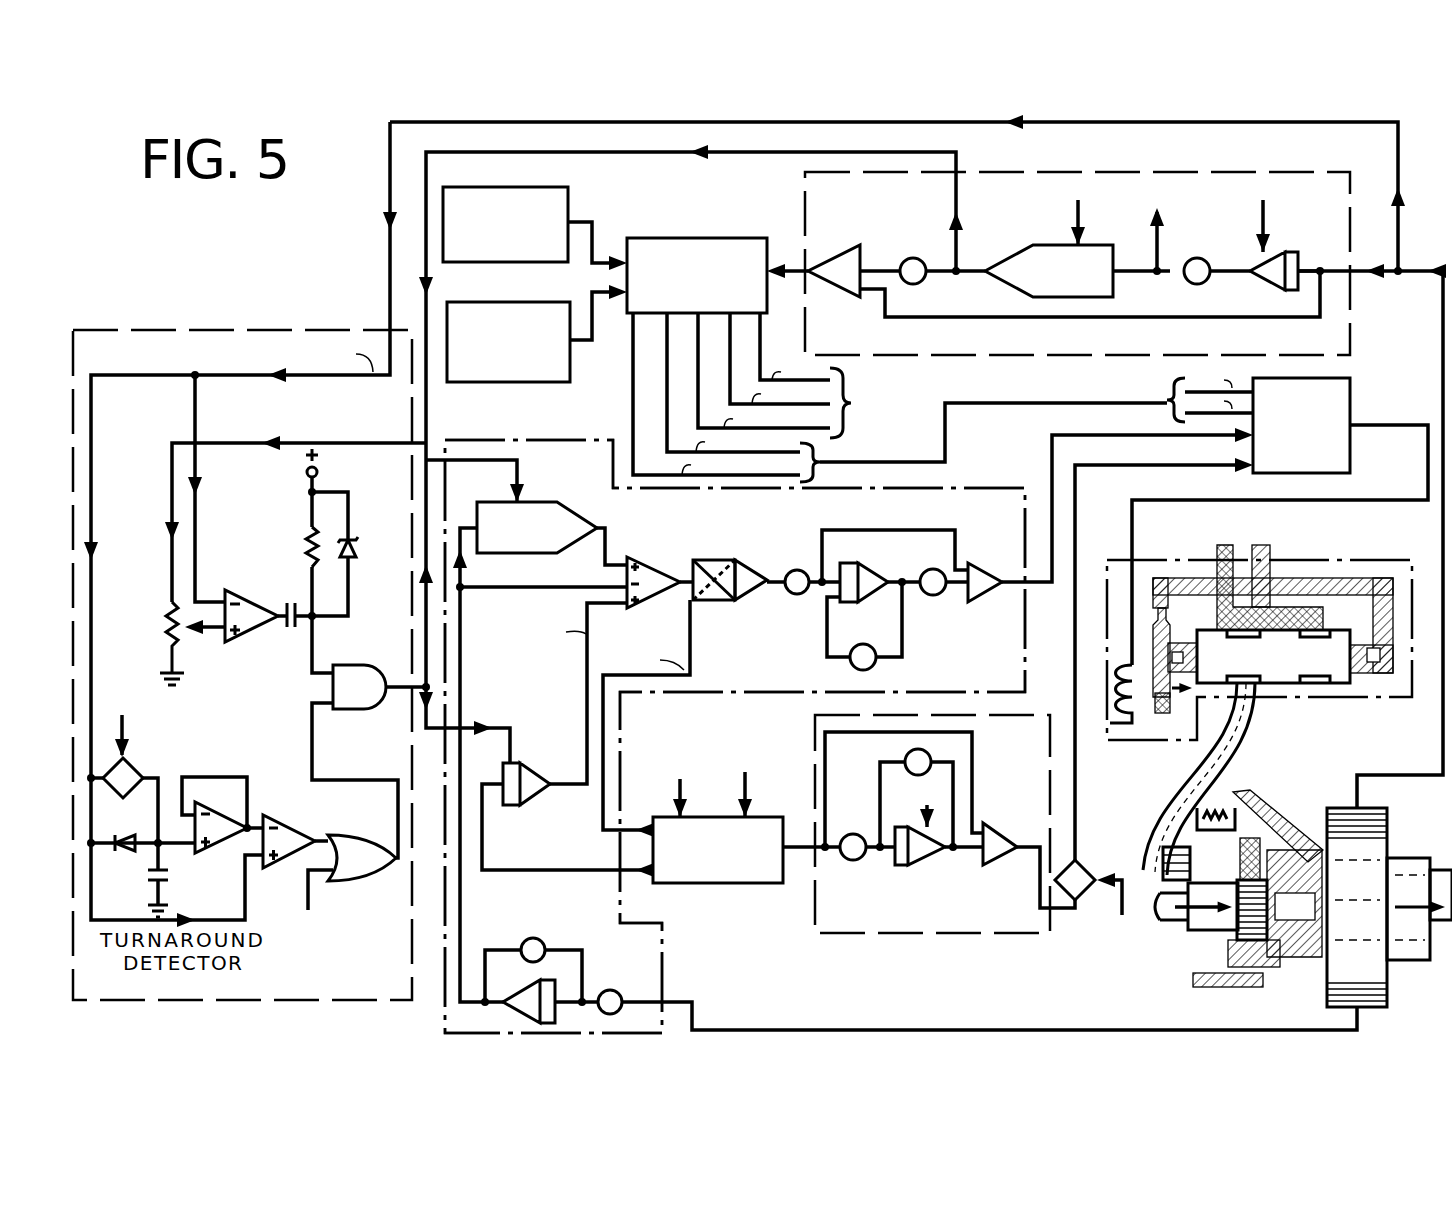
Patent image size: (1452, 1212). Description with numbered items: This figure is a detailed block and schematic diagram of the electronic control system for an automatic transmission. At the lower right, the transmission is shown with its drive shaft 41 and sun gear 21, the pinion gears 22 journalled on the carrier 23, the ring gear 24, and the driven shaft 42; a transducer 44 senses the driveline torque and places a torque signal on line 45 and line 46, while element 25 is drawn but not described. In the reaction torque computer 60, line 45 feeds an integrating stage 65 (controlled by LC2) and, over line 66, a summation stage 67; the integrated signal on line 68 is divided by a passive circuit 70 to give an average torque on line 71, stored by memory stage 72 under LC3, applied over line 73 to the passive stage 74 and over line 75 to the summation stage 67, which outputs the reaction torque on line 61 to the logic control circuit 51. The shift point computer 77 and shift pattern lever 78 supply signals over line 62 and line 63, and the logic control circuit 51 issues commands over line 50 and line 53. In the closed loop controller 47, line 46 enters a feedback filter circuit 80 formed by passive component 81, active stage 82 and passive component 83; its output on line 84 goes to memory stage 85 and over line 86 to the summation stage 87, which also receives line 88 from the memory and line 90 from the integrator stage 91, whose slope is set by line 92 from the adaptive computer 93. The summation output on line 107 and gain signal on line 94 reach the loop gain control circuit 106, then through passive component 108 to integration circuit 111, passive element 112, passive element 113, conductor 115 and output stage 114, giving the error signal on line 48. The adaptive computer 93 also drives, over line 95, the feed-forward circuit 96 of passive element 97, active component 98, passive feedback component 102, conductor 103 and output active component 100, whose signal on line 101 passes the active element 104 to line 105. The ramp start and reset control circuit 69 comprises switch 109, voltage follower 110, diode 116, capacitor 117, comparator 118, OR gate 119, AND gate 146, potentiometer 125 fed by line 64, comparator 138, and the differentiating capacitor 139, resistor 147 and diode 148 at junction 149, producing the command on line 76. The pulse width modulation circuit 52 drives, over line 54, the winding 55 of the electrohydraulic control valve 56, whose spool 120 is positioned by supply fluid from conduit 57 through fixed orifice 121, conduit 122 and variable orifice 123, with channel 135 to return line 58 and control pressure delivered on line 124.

The sun gear 21 is at (1248, 905).
The pinion gears 22 is at (1258, 852).
The carrier 23 is at (1270, 852).
The ring gear 24 is at (1258, 792).
The spring 25 is at (1212, 808).
The drive shaft 41 is at (1180, 932).
The driven shaft 42 is at (1425, 858).
The transducer 44 is at (1380, 975).
The line 45 is at (390, 312).
The line 46 is at (1280, 1030).
The closed loop controller 47 is at (735, 736).
The line 48 is at (1052, 462).
The line 50 is at (751, 397).
The logic control circuit 51 is at (716, 238).
The pulse width modulation circuit 52 is at (1350, 386).
The line 53 is at (1036, 410).
The line 54 is at (1362, 500).
The winding 55 is at (1112, 725).
The electrohydraulic control valve 56 is at (1356, 560).
The conduit 57 is at (1262, 545).
The return pressure line 58 is at (1222, 545).
The reaction torque computer 60 is at (1228, 155).
The line 61 is at (784, 278).
The line 62 is at (598, 230).
The line 63 is at (596, 325).
The line 64 is at (753, 155).
The integrating stage 65 is at (1290, 250).
The line 66 is at (1133, 317).
The summation stage 67 is at (840, 262).
The line 68 is at (1230, 268).
The ramp start and reset control circuit 69 is at (200, 330).
The passive circuit 70 is at (1200, 258).
The line 71 is at (1152, 244).
The memory stage 72 is at (1034, 245).
The line 73 is at (972, 267).
The passive stage 74 is at (913, 258).
The line 75 is at (882, 267).
The line 76 is at (412, 698).
The shift point computer 77 is at (486, 187).
The shift pattern lever 78 is at (487, 302).
The feedback filter circuit 80 is at (683, 958).
The passive component 81 is at (604, 990).
The active stage 82 is at (520, 990).
The passive component 83 is at (522, 944).
The line 84 is at (465, 655).
The memory stage 85 is at (540, 556).
The line 86 is at (543, 590).
The summation stage 87 is at (652, 565).
The line 88 is at (608, 545).
The line 90 is at (588, 633).
The integrator stage 91 is at (540, 763).
The line 92 is at (500, 830).
The adaptive computer 93 is at (770, 817).
The line 94 is at (692, 632).
The line 95 is at (797, 860).
The feed-forward circuit 96 is at (815, 716).
The passive element 97 is at (853, 833).
The active component 98 is at (915, 860).
The output active component 100 is at (996, 828).
The line 101 is at (1066, 912).
The passive feedback component 102 is at (905, 758).
The conductor 103 is at (972, 760).
The active element 104 is at (1092, 865).
The line 105 is at (1102, 465).
The loop gain control circuit 106 is at (712, 602).
The line 107 is at (684, 587).
The passive component 108 is at (790, 595).
The active element 109 is at (133, 762).
The operational amplifier 110 is at (228, 848).
The integration circuit 111 is at (866, 568).
The passive element 112 is at (878, 647).
The passive element 113 is at (922, 595).
The output stage 114 is at (978, 563).
The conductor 115 is at (822, 552).
The diode 116 is at (125, 852).
The capacitor 117 is at (168, 880).
The comparator 118 is at (285, 815).
The OR gate 119 is at (343, 835).
The spool 120 is at (1273, 656).
The first stage fixed orifice 121 is at (1168, 615).
The conduit 122 is at (1155, 650).
The first stage variable orifice 123 is at (1195, 692).
The line 124 is at (1235, 745).
The potentiometer 125 is at (182, 648).
The channel 135 is at (1160, 714).
The operational amplifier 138 is at (240, 598).
The capacitor 139 is at (290, 628).
The AND gate 146 is at (345, 665).
The resistor 147 is at (292, 508).
The diode 148 is at (356, 541).
The circuit junction 149 is at (318, 616).